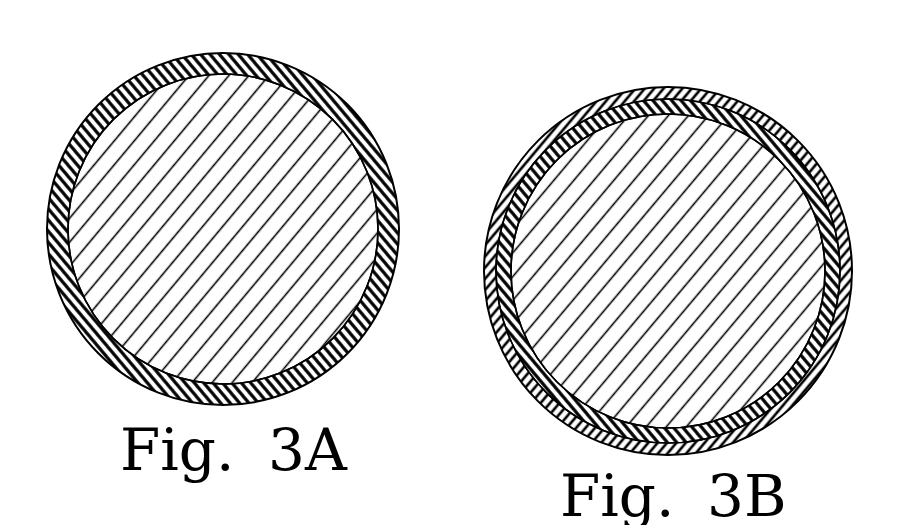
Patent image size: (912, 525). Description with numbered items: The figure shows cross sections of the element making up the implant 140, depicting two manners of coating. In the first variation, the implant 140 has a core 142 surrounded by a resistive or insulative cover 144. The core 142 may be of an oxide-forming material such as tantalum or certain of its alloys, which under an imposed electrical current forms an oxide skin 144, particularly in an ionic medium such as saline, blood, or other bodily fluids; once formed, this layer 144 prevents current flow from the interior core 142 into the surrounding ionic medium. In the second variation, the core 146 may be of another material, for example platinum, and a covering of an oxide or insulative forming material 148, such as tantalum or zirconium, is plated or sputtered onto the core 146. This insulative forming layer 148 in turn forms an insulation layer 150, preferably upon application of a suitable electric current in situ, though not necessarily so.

In FIG. 3A, the implant 140 is at (366, 73).
In FIG. 3B, the implant 140 is at (466, 318).
In FIG. 3A, the core 142 is at (150, 337).
In FIG. 3A, the resistive or insulative cover 144 is at (130, 88).
In FIG. 3B, the core 146 is at (753, 350).
In FIG. 3B, the insulative forming layer 148 is at (745, 128).
In FIG. 3B, the insulation layer 150 is at (572, 120).